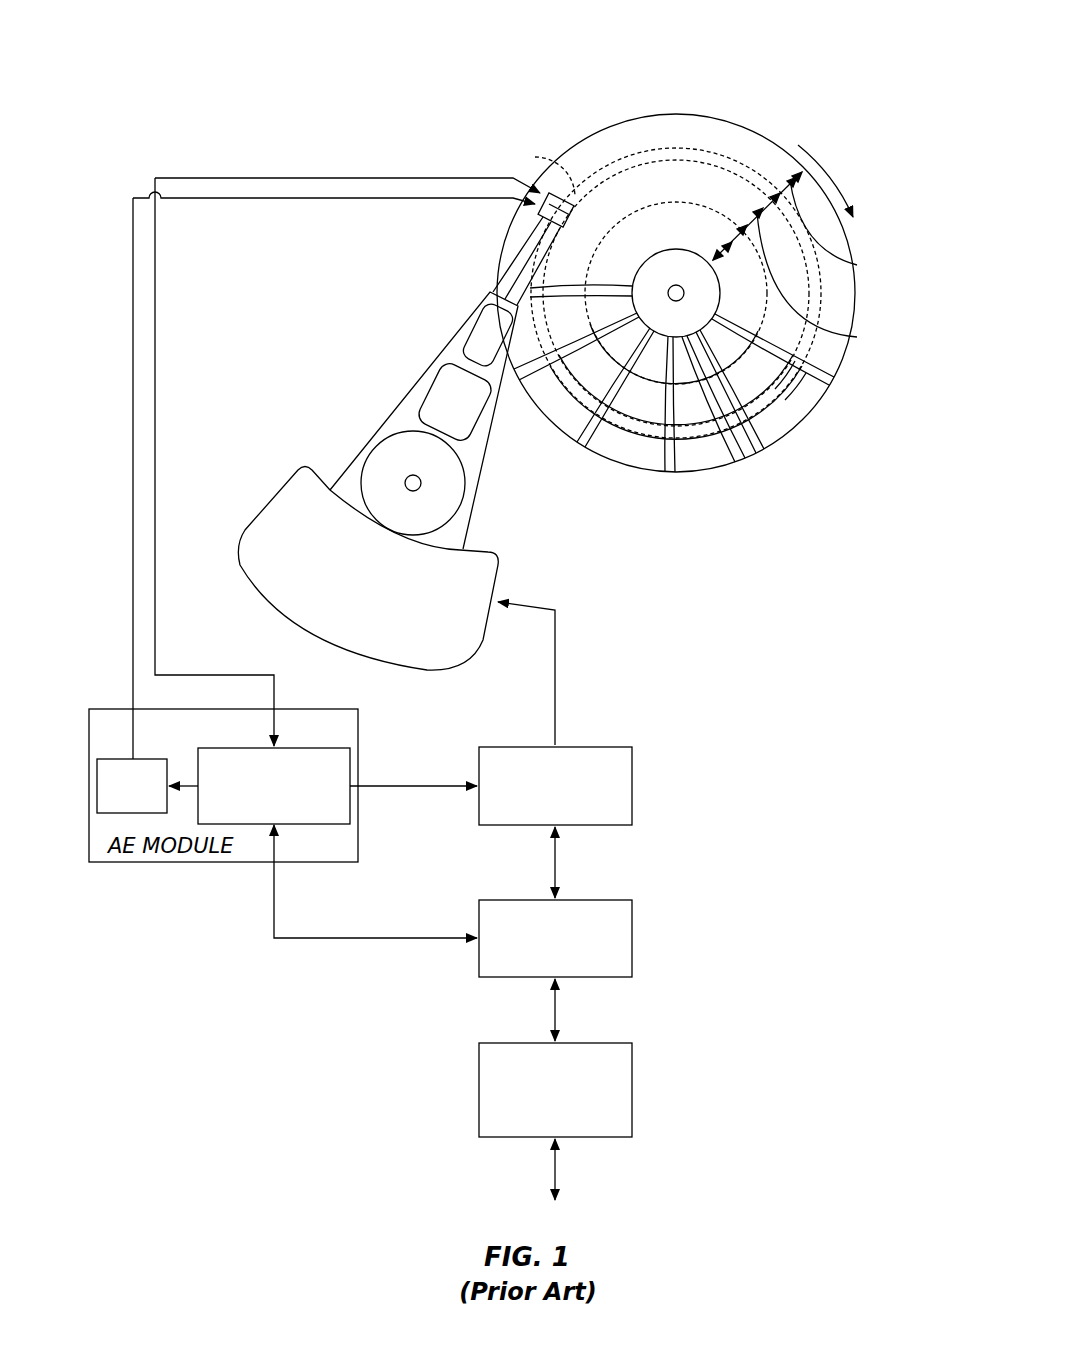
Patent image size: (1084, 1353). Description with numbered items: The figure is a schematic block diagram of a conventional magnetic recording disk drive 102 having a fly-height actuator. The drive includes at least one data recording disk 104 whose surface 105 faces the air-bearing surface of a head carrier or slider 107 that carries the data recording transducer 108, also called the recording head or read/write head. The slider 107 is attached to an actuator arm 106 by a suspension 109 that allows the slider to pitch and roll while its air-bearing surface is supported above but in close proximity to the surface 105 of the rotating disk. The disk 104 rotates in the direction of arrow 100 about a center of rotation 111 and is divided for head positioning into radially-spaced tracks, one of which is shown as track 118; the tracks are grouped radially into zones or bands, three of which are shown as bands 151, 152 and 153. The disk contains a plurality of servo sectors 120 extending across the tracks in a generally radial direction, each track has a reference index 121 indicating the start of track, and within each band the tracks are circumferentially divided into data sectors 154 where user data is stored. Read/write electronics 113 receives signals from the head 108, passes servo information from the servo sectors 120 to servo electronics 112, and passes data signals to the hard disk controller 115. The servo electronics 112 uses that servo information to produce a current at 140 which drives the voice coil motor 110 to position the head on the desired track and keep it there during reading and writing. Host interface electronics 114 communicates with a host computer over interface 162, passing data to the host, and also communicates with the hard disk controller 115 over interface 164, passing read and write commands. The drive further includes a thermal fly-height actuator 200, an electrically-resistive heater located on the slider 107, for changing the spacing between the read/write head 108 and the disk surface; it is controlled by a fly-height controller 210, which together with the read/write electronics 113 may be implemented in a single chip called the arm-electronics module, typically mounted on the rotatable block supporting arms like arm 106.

The disk drive 102 is at (252, 48).
The data recording disk 104 is at (640, 125).
The surface of disk 105 is at (722, 130).
The arrow 100 is at (828, 178).
The track 118 is at (534, 168).
The band 153 is at (725, 243).
The center of rotation 111 is at (676, 285).
The band 151 is at (857, 265).
The band 152 is at (857, 337).
The servo sectors 120 is at (582, 445).
The reference index 121 is at (828, 385).
The data sectors 154 is at (803, 403).
The data recording transducer 108 is at (568, 203).
The thermal fly-height actuator 200 is at (547, 212).
The slider 107 is at (543, 192).
The suspension 109 is at (530, 296).
The actuator arm 106 is at (470, 318).
The voice coil motor 110 is at (305, 472).
The current 140 is at (557, 622).
The fly-height controller 210 is at (150, 757).
The read/write electronics 113 is at (290, 748).
The servo electronics 112 is at (610, 747).
The hard disk controller 115 is at (612, 900).
The interface 164 is at (557, 1010).
The host interface electronics 114 is at (612, 1043).
The interface 162 is at (557, 1170).